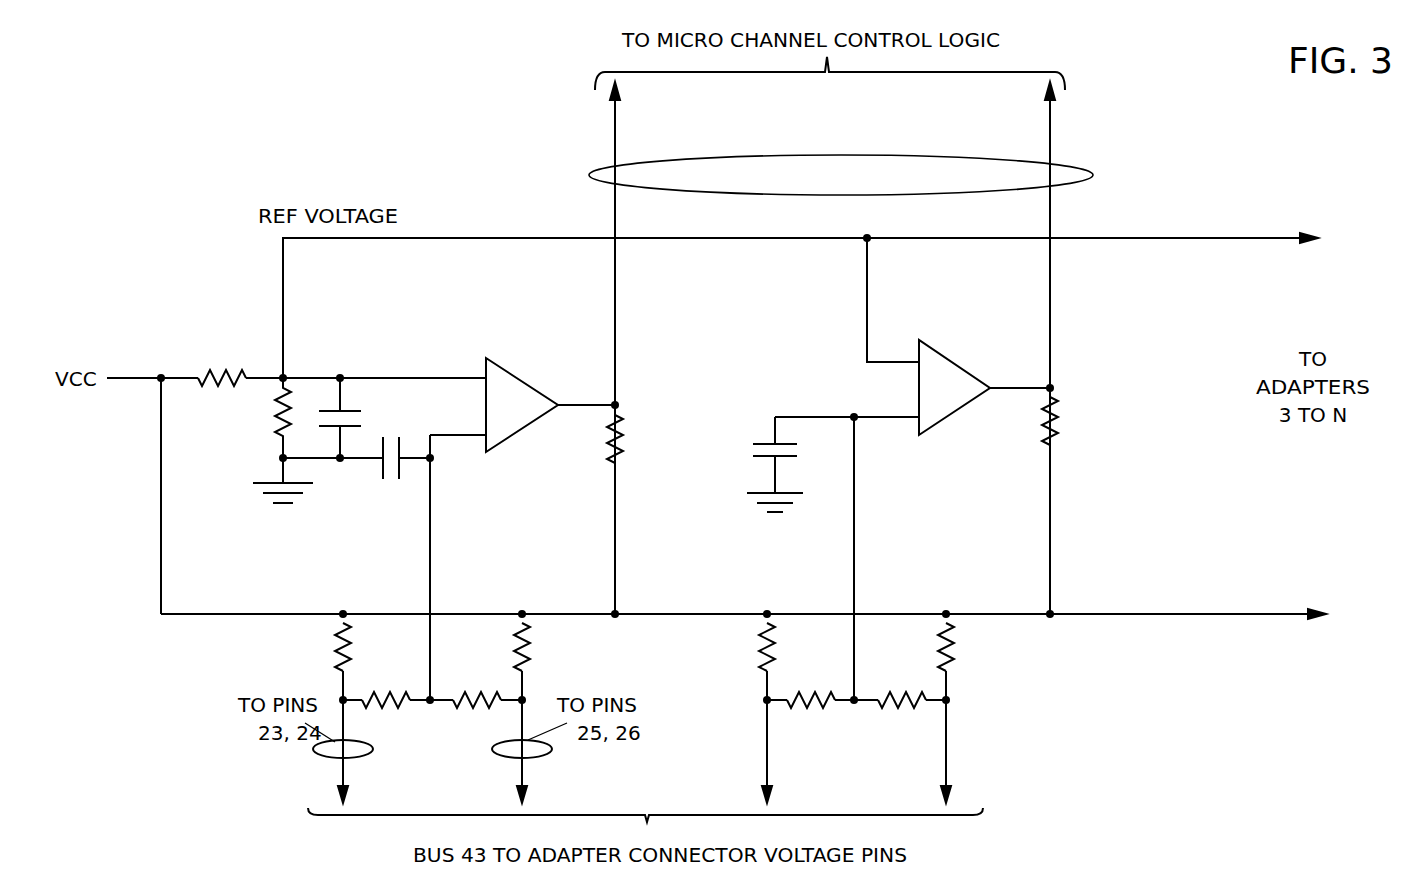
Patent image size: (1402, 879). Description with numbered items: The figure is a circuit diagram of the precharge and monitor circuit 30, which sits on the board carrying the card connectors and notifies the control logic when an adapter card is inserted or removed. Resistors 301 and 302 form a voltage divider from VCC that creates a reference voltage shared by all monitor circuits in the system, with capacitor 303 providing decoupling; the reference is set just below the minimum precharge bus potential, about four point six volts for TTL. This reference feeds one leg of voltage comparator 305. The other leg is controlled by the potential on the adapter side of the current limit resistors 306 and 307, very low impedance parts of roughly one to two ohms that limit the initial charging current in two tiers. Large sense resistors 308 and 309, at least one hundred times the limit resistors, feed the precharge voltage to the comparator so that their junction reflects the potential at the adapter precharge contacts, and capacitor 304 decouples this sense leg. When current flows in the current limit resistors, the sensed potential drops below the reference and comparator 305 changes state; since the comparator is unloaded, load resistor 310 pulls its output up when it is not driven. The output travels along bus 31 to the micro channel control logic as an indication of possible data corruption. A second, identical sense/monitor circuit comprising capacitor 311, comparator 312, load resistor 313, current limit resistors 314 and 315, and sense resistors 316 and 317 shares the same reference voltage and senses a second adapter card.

The precharge and monitor circuit 30 is at (1106, 714).
The bus 31 is at (1093, 175).
The resistor 301 is at (211, 374).
The resistor 302 is at (278, 430).
The capacitor 303 is at (349, 412).
The capacitor 304 is at (382, 468).
The voltage comparator 305 is at (530, 385).
The current limit resistor 306 is at (333, 628).
The current limit resistor 307 is at (527, 640).
The sense resistor 308 is at (377, 682).
The sense resistor 309 is at (465, 682).
The load resistor 310 is at (628, 452).
The capacitor 311 is at (763, 440).
The voltage comparator 312 is at (960, 365).
The load resistor 313 is at (1063, 407).
The current limit resistor 314 is at (762, 628).
The current limit resistor 315 is at (953, 640).
The sense resistor 316 is at (800, 682).
The sense resistor 317 is at (887, 682).